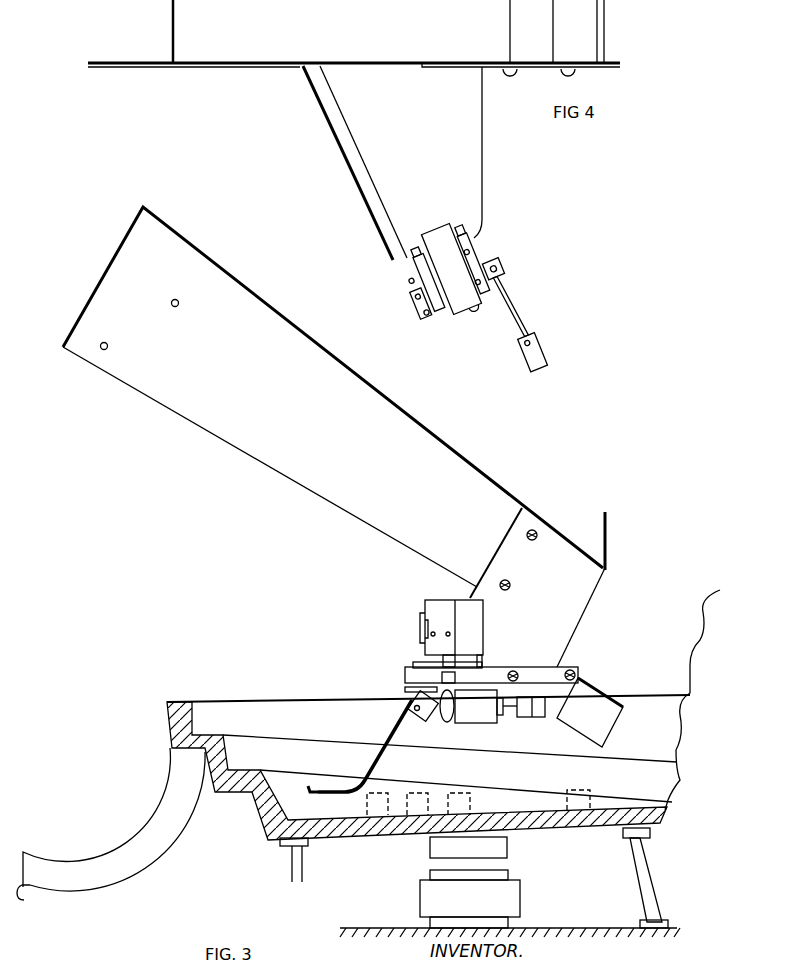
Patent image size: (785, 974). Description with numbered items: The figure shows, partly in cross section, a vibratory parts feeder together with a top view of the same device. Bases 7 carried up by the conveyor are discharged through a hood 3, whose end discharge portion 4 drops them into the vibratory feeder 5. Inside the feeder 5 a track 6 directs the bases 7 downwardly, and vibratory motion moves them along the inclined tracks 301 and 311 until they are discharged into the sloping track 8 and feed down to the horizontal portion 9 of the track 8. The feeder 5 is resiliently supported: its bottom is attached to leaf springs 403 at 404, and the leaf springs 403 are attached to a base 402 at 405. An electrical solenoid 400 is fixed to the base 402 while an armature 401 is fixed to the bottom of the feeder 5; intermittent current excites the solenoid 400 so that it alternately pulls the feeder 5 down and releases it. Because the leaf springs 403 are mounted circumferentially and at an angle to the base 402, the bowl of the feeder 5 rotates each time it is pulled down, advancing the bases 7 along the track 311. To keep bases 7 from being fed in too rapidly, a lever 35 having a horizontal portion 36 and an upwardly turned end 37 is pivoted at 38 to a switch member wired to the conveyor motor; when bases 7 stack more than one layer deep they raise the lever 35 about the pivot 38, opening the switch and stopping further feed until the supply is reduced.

In FIG. 4, the hood 3 is at (358, 15).
In FIG. 3, the hood 3 is at (342, 433).
In FIG. 4, the end discharge portion 4 is at (598, 66).
In FIG. 3, the end discharge portion 4 is at (557, 617).
In FIG. 3, the vibratory feeder 5 is at (260, 840).
In FIG. 3, the track 6 is at (205, 733).
In FIG. 3, the bases 7 is at (378, 800).
In FIG. 3, the track 8 is at (138, 850).
In FIG. 3, the horizontal portion 9 is at (29, 900).
In FIG. 4, the lever 35 is at (513, 303).
In FIG. 3, the lever 35 is at (390, 737).
In FIG. 4, the horizontal portion 36 is at (545, 343).
In FIG. 3, the horizontal portion 36 is at (328, 791).
In FIG. 3, the upwardly turned end 37 is at (307, 787).
In FIG. 4, the pivot 38 is at (503, 261).
In FIG. 3, the pivot 38 is at (430, 722).
In FIG. 3, the track 301 is at (283, 770).
In FIG. 3, the track 311 is at (295, 737).
In FIG. 3, the electrical solenoid 400 is at (524, 900).
In FIG. 3, the armature 401 is at (508, 845).
In FIG. 3, the base 402 is at (618, 927).
In FIG. 3, the leaf springs 403 is at (653, 868).
In FIG. 3, the attachment point 404 is at (650, 832).
In FIG. 3, the attachment point 405 is at (668, 915).